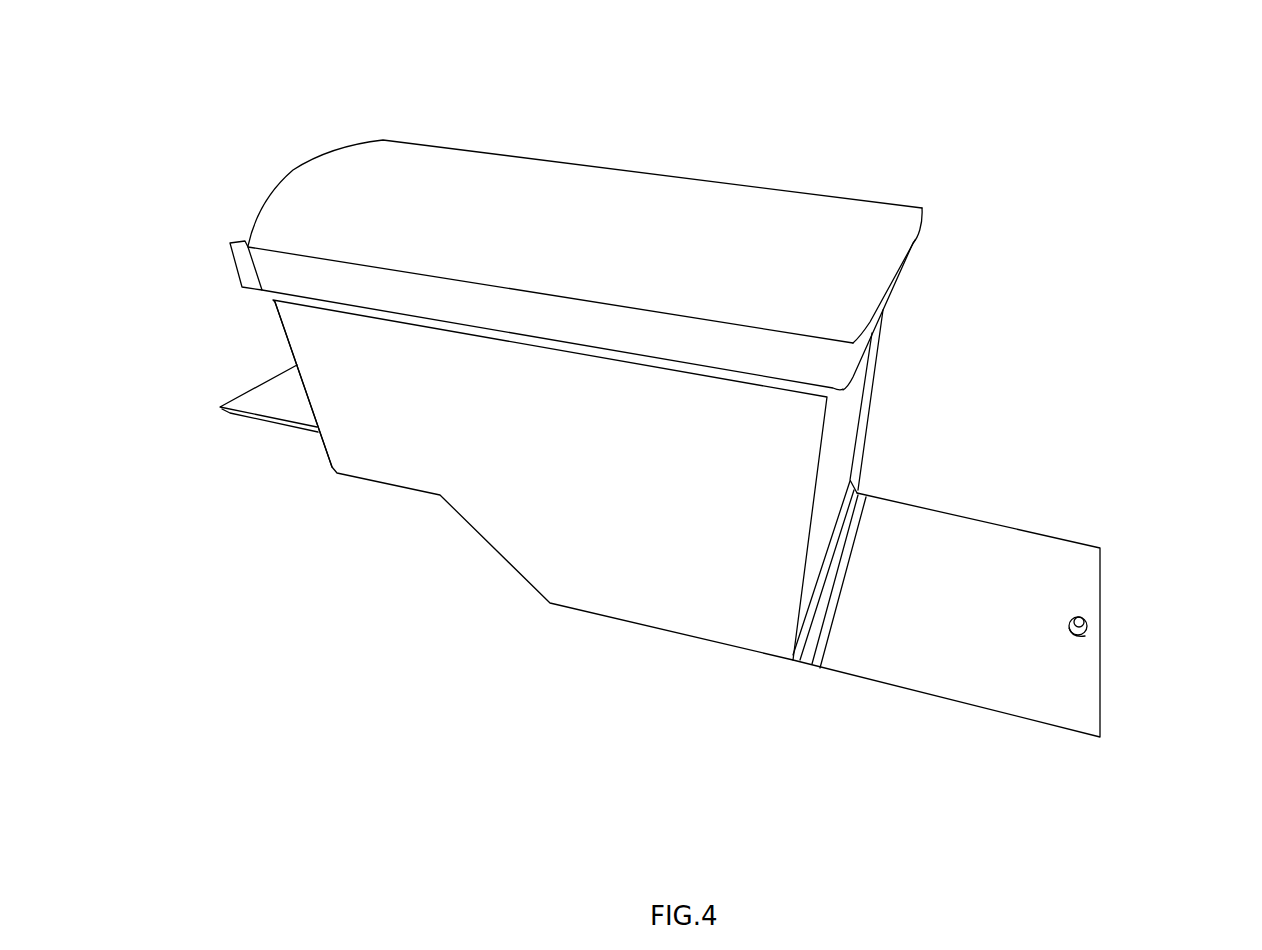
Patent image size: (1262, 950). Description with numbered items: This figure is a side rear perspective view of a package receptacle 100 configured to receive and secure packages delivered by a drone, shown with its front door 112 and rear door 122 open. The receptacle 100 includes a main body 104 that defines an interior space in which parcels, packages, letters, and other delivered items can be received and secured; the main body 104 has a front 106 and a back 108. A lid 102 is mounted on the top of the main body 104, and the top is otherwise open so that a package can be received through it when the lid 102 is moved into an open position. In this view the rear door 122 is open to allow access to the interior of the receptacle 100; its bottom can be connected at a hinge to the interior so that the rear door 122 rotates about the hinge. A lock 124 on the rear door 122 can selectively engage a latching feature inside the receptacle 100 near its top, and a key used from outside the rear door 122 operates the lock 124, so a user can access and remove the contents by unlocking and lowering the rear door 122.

The package receptacle 100 is at (702, 26).
The lid 102 is at (810, 220).
The main body 104 is at (483, 540).
The front 106 is at (323, 453).
The back 108 is at (872, 387).
The front door 112 is at (240, 402).
The rear door 122 is at (1077, 572).
The lock 124 is at (1093, 633).